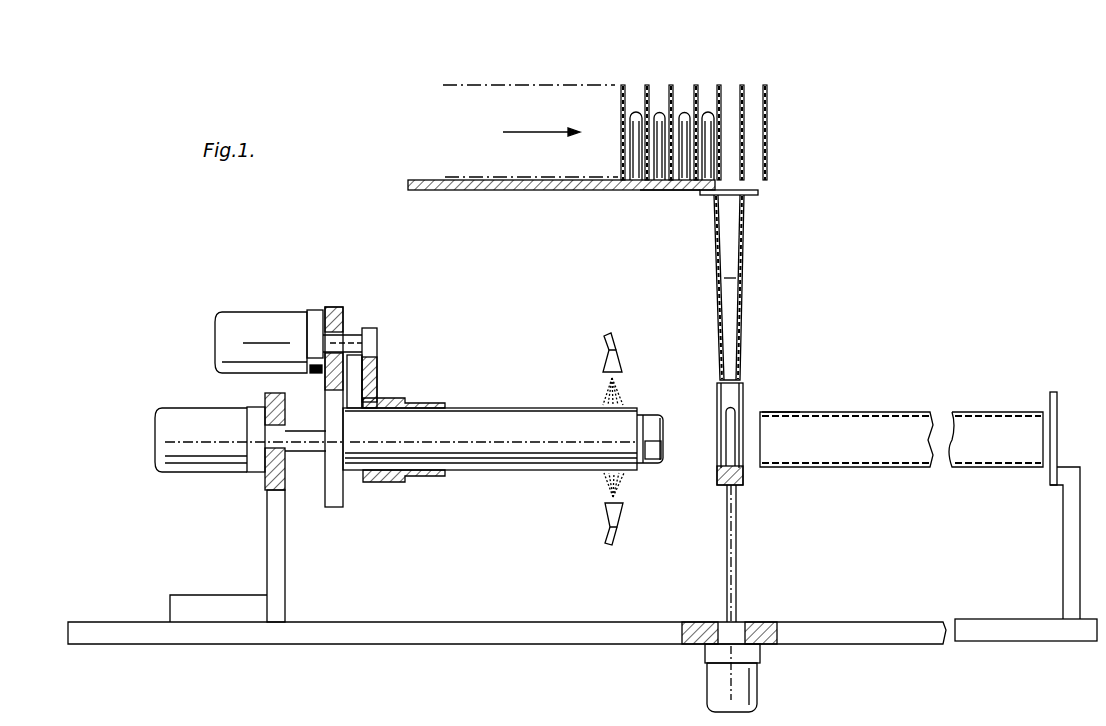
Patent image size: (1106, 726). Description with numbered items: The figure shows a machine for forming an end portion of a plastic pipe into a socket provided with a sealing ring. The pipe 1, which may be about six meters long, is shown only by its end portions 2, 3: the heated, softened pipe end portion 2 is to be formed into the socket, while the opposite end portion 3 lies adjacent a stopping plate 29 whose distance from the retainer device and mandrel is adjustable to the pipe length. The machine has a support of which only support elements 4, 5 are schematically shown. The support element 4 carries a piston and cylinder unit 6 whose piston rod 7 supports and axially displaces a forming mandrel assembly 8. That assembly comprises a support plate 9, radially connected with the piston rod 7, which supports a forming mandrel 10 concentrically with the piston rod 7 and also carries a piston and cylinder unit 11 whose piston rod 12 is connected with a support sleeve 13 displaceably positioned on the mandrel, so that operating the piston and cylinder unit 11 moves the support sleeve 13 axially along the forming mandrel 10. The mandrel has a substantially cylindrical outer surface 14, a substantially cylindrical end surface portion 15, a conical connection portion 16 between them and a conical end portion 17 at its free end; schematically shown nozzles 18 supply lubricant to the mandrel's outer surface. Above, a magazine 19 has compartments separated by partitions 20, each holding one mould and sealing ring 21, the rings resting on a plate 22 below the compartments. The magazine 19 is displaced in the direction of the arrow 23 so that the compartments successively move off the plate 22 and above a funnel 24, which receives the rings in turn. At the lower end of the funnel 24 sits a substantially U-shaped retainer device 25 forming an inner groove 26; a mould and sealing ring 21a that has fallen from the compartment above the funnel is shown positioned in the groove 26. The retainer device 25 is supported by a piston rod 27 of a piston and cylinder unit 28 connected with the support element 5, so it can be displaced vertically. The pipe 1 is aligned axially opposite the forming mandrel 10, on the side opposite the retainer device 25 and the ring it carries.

The pipe 1 is at (868, 409).
The pipe end portion 2 is at (798, 410).
The pipe end portion 3 is at (988, 410).
The support element 4 is at (285, 580).
The support element 5 is at (489, 621).
The piston and cylinder unit 6 is at (206, 468).
The piston rod 7 is at (304, 458).
The forming mandrel assembly 8 is at (507, 406).
The support plate 9 is at (344, 504).
The forming mandrel 10 is at (525, 470).
The piston and cylinder unit 11 is at (257, 326).
The piston rod 12 is at (352, 330).
The support sleeve 13 is at (401, 398).
The outer surface 14 is at (553, 426).
The end surface portion 15 is at (655, 470).
The conical connection portion 16 is at (641, 414).
The conical end portion 17 is at (666, 440).
The nozzles 18 is at (626, 361).
The magazine 19 is at (784, 86).
The partitions 20 is at (718, 85).
The mould and sealing ring 21 is at (680, 193).
The mould and sealing ring 21a is at (727, 430).
The plate 22 is at (572, 193).
The arrow 23 is at (540, 130).
The funnel 24 is at (728, 268).
The retainer device 25 is at (745, 482).
The inner groove 26 is at (732, 392).
The piston rod 27 is at (738, 586).
The piston and cylinder unit 28 is at (712, 686).
The stopping plate 29 is at (1058, 418).